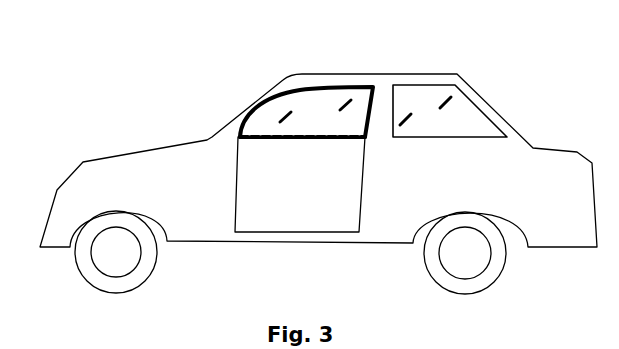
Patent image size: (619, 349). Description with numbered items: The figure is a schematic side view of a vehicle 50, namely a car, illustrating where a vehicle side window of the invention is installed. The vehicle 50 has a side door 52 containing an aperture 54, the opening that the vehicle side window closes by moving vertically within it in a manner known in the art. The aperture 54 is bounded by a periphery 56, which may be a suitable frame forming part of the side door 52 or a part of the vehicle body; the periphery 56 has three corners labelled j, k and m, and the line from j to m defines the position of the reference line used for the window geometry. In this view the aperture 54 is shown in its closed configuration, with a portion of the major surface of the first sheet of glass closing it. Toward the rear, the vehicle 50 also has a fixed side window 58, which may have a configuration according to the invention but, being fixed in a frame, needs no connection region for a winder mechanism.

The vehicle 50 is at (158, 111).
The side door 52 is at (303, 207).
The aperture 54 is at (322, 105).
The periphery 56 is at (288, 92).
The fixed side window 58 is at (465, 118).